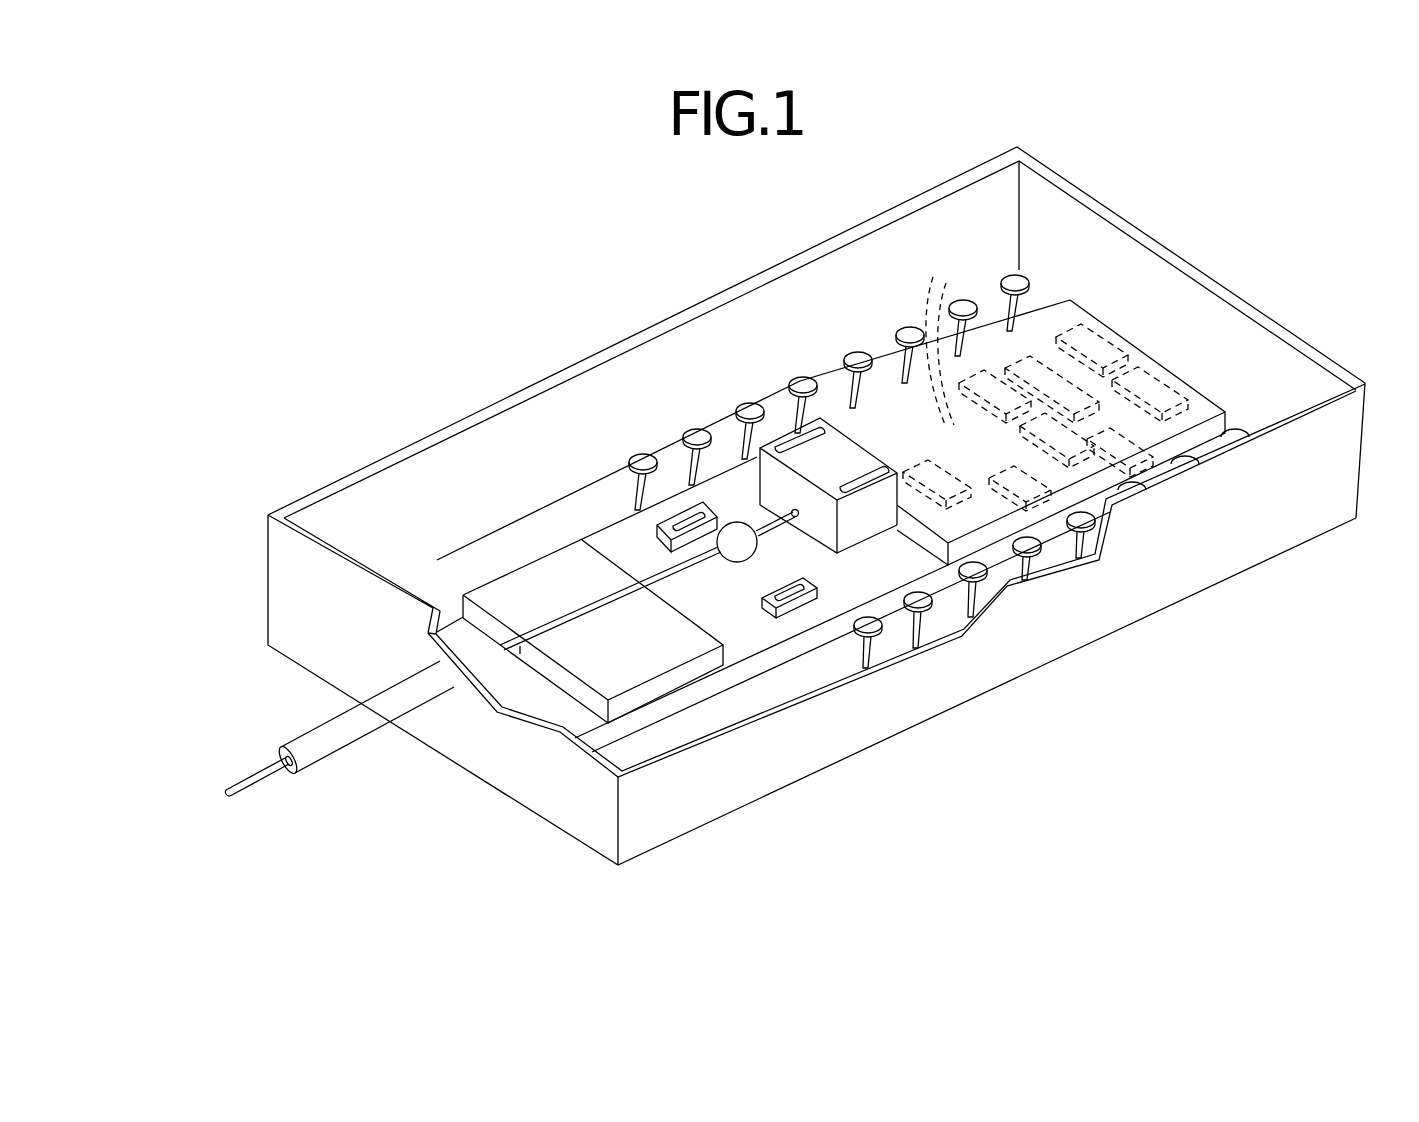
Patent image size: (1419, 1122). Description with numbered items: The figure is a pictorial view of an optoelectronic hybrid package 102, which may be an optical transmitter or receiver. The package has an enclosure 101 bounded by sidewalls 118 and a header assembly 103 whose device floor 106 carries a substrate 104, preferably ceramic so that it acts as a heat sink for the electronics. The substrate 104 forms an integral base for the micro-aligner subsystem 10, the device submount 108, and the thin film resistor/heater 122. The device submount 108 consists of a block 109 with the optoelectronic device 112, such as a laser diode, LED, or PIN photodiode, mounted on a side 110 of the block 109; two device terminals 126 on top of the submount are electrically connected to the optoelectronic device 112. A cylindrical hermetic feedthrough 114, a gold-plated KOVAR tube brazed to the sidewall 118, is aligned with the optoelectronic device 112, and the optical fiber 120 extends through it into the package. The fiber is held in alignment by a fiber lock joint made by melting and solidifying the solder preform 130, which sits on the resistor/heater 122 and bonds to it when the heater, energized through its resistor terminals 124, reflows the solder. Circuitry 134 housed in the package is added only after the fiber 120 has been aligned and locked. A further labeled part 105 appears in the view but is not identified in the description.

The micro-aligner subsystem 10 is at (635, 664).
The enclosure 101 is at (517, 507).
The optoelectronic hybrid package 102 is at (1205, 738).
The header assembly 103 is at (580, 846).
The substrate 104 is at (975, 560).
The platform 105 is at (895, 565).
The device floor 106 is at (1043, 527).
The device submount 108 is at (871, 440).
The block 109 is at (780, 445).
The side of the block 110 is at (768, 490).
The optoelectronic device 112 is at (799, 518).
The cylindrical hermetic feedthrough 114 is at (338, 737).
The sidewalls 118 is at (280, 578).
The optical fiber 120 is at (253, 792).
The resistor/heater 122 is at (693, 537).
The resistor terminals 124 is at (696, 520).
The device terminals 126 is at (1020, 582).
The solder preform 130 is at (742, 560).
The circuitry 134 is at (938, 335).